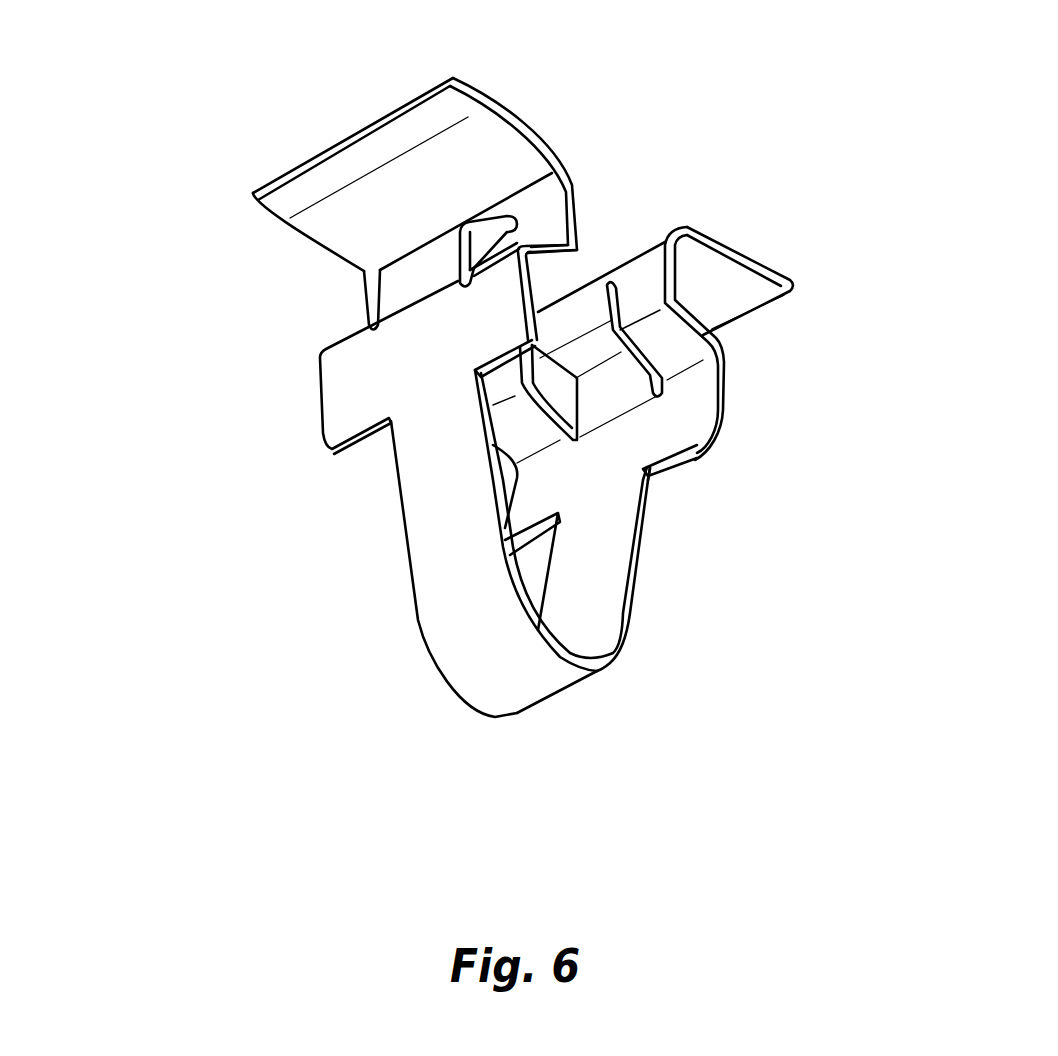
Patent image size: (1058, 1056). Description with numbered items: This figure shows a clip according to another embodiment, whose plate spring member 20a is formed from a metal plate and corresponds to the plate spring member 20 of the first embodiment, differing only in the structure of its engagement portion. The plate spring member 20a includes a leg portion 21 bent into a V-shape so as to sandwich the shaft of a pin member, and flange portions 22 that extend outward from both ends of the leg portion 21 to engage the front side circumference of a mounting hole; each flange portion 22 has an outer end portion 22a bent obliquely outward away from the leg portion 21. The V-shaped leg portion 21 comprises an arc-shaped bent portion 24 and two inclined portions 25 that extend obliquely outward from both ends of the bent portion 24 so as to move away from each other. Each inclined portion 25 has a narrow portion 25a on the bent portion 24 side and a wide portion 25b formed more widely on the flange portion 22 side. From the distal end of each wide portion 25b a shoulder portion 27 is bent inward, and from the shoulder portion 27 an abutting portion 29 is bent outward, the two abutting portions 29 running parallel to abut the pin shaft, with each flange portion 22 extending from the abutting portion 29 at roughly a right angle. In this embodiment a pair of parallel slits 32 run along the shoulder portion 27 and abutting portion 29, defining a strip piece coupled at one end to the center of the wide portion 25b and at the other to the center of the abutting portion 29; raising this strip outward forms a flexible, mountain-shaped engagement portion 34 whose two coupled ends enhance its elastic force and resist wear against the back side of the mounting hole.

The plate spring member 20 is at (150, 328).
The plate spring member 20a is at (698, 188).
The leg portion 21 is at (314, 426).
The flange portion 22 is at (727, 273).
The outer end portion 22a is at (377, 140).
The bent portion 24 is at (497, 702).
The inclined portion 25 is at (435, 580).
The narrow portion 25a is at (627, 592).
The wide portion 25b is at (665, 444).
The shoulder portion 27 is at (677, 347).
The abutting portion 29 is at (573, 203).
The slit 32 is at (660, 398).
The engagement portion 34 is at (400, 289).